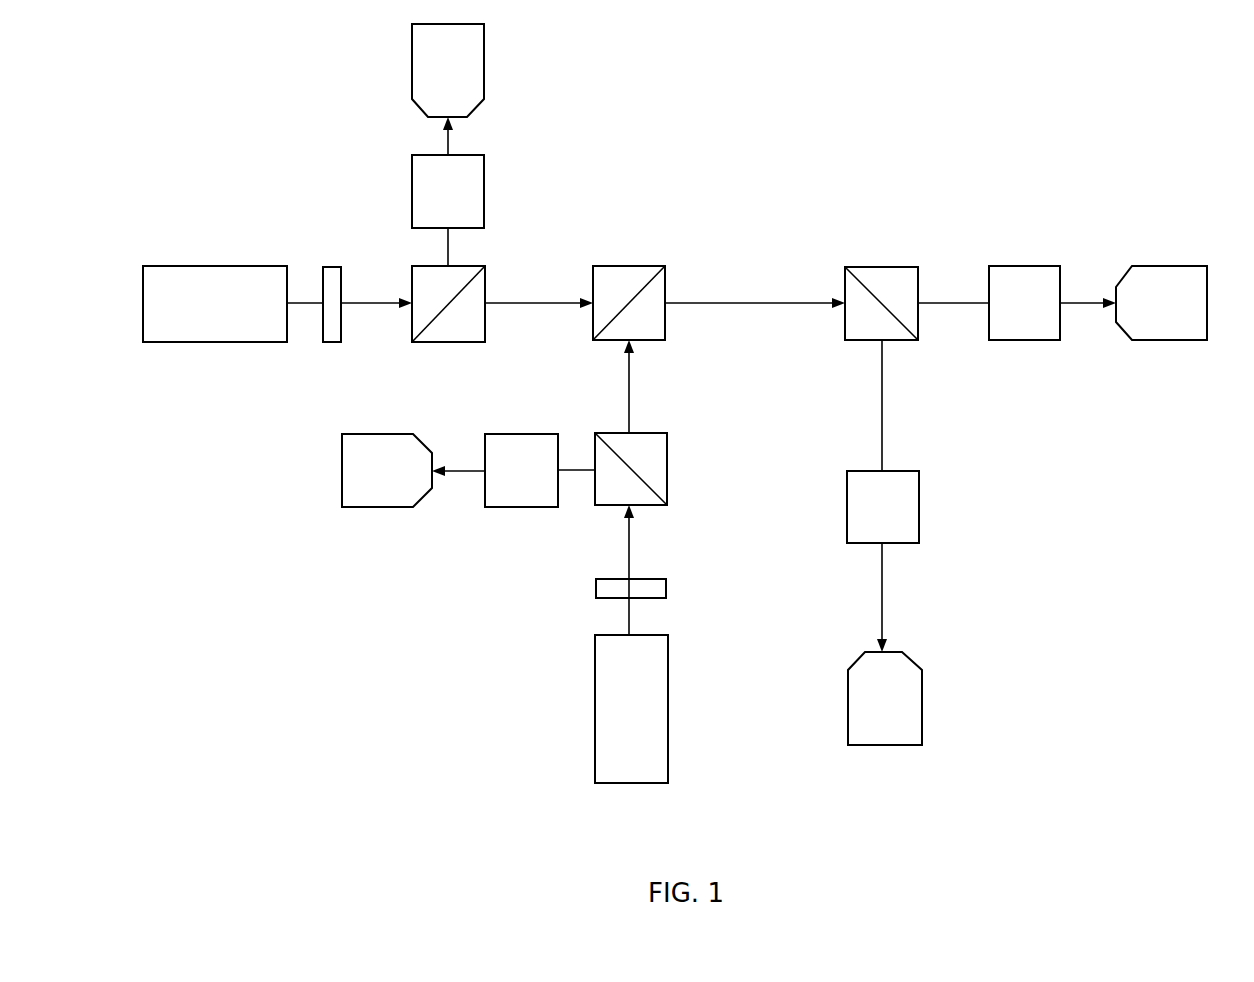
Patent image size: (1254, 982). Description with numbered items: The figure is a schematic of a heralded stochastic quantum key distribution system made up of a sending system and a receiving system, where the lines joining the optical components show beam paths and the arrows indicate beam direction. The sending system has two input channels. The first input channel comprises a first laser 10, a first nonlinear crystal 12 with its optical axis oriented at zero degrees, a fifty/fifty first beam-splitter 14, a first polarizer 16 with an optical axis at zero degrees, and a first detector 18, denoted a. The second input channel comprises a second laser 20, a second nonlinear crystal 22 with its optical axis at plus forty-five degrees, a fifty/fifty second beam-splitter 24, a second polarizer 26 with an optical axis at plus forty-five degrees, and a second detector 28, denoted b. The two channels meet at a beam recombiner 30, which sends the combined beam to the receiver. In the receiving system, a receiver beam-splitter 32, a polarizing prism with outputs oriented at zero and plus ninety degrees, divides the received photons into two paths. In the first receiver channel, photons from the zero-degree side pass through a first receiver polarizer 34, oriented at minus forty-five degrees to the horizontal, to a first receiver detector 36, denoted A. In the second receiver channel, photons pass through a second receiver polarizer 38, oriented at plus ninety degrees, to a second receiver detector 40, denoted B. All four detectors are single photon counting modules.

The first laser 10 is at (220, 320).
The first nonlinear crystal 12 is at (330, 318).
The first beam-splitter 14 is at (487, 295).
The first polarizer 16 is at (423, 203).
The first detector 18 is at (467, 99).
The second laser 20 is at (612, 688).
The second nonlinear crystal 22 is at (605, 584).
The second beam-splitter 24 is at (657, 473).
The second polarizer 26 is at (502, 503).
The second detector 28 is at (413, 498).
The beam recombiner 30 is at (660, 265).
The receiver beam-splitter 32 is at (898, 283).
The first receiver polarizer 34 is at (1035, 340).
The first receiver detector 36 is at (1170, 322).
The second receiver polarizer 38 is at (913, 511).
The second receiver detector 40 is at (903, 690).